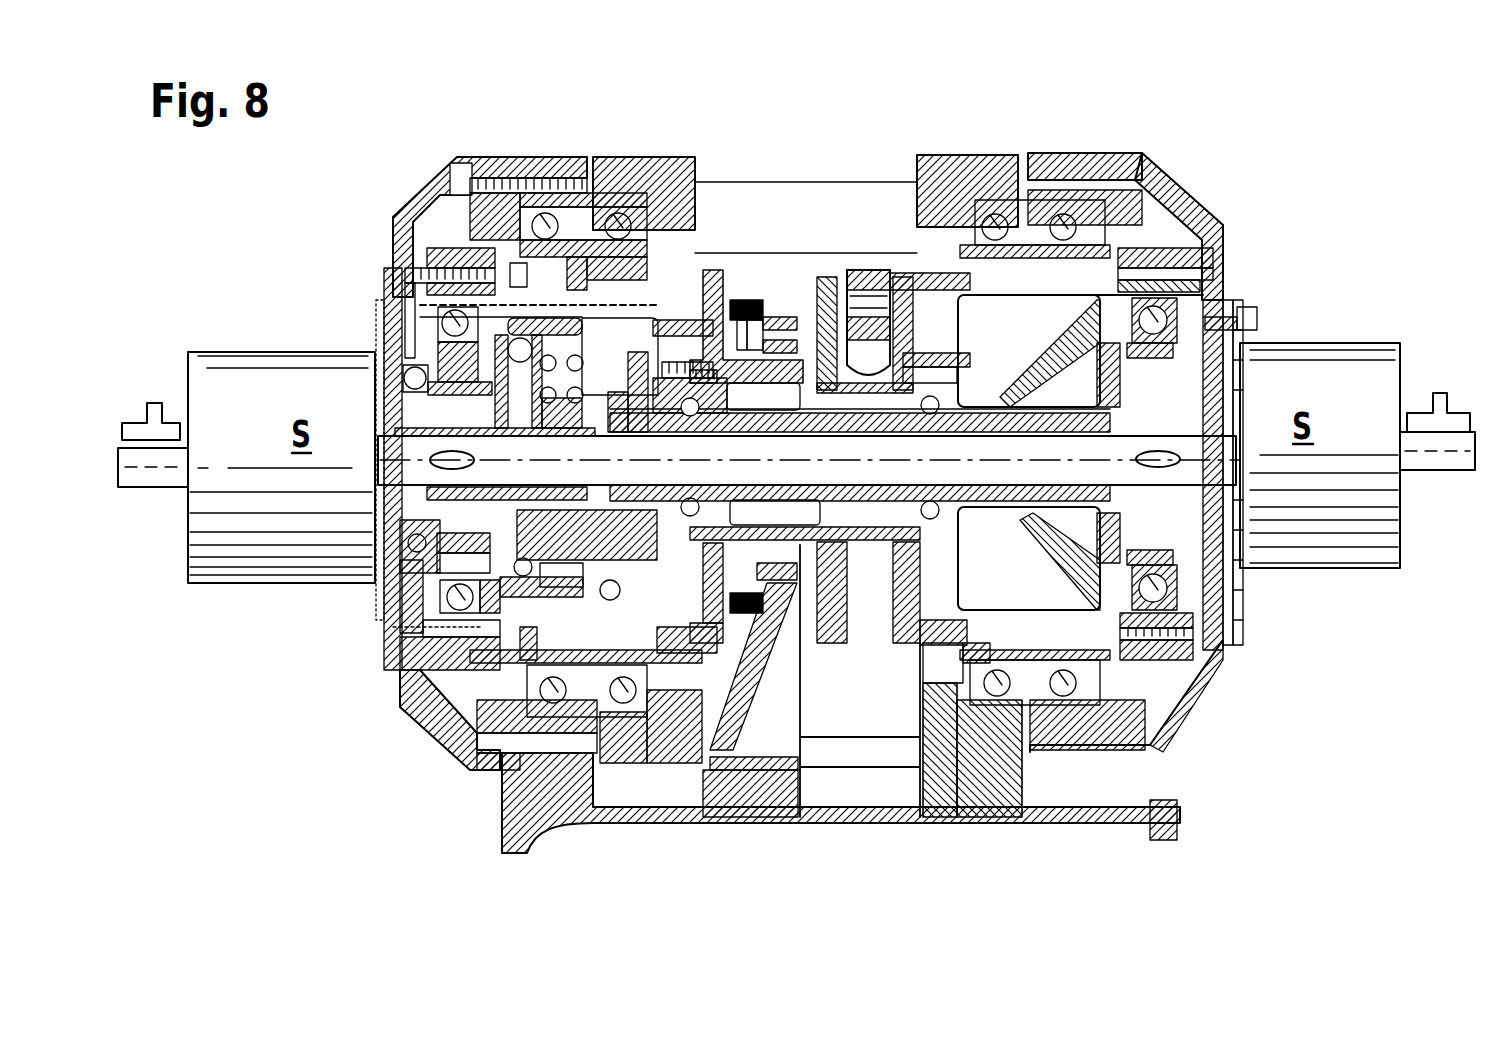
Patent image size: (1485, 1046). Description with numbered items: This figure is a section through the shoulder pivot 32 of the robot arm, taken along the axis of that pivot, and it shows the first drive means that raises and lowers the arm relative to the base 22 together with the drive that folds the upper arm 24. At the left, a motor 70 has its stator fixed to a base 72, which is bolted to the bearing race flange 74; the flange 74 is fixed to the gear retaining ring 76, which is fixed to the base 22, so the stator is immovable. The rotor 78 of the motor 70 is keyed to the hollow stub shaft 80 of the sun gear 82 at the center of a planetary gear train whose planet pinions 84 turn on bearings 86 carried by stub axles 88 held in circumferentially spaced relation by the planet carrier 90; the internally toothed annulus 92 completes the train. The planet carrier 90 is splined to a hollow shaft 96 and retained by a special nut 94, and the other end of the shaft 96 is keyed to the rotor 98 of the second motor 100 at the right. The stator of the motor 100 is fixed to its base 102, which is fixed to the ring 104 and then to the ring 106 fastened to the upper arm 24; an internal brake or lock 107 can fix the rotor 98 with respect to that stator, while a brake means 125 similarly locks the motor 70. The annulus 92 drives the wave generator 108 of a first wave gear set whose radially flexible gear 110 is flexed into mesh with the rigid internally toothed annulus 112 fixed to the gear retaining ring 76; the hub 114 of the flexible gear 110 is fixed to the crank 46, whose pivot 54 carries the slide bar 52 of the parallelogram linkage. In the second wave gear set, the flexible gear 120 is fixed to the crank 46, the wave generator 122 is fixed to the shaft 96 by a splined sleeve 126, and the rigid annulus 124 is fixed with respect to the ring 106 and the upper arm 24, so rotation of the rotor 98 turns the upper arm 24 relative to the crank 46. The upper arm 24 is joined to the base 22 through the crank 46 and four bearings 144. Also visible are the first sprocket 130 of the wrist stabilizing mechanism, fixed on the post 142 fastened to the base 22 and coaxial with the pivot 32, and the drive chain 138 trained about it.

The base 22 is at (573, 807).
The upper arm 24 is at (640, 157).
The shoulder pivot 32 is at (1015, 488).
The crank 46 is at (730, 700).
The fourth link 52 is at (893, 280).
The pivot of the crank 54 is at (866, 280).
The motor 70 is at (231, 410).
The base 72 is at (380, 606).
The bearing race flange 74 is at (395, 640).
The gear retaining ring 76 is at (432, 717).
The rotor 78 is at (395, 440).
The hollow stub shaft 80 is at (390, 375).
The sun gear 82 is at (440, 492).
The planet pinions 84 is at (400, 293).
The bearings 86 is at (600, 380).
The stub axles 88 is at (722, 380).
The planet carrier 90 is at (710, 350).
The internally toothed annulus 92 is at (397, 234).
The special nut 94 is at (697, 370).
The hollow shaft 96 is at (812, 300).
The rotor 98 is at (1208, 445).
The second motor 100 is at (1377, 399).
The base 102 is at (1240, 590).
The ring 104 is at (1247, 607).
The ring 106 is at (1213, 706).
The internal brake means 107 is at (1422, 393).
The wave generator 108 is at (402, 675).
The radially flexible gear 110 is at (505, 158).
The internally toothed annulus 112 is at (412, 718).
The hub 114 is at (743, 303).
The flexible gear 120 is at (1167, 253).
The wave generator 122 is at (1183, 320).
The rigid annulus 124 is at (1160, 273).
The brake means 125 is at (178, 402).
The sleeve 126 is at (1010, 403).
The first sprocket 130 is at (768, 310).
The first drive chain 138 is at (815, 700).
The post 142 is at (847, 700).
The bearings 144 is at (505, 805).